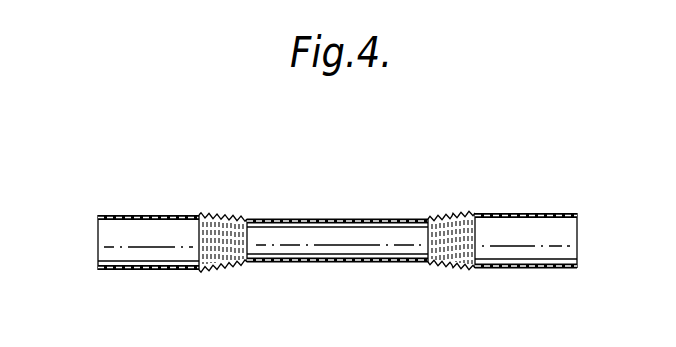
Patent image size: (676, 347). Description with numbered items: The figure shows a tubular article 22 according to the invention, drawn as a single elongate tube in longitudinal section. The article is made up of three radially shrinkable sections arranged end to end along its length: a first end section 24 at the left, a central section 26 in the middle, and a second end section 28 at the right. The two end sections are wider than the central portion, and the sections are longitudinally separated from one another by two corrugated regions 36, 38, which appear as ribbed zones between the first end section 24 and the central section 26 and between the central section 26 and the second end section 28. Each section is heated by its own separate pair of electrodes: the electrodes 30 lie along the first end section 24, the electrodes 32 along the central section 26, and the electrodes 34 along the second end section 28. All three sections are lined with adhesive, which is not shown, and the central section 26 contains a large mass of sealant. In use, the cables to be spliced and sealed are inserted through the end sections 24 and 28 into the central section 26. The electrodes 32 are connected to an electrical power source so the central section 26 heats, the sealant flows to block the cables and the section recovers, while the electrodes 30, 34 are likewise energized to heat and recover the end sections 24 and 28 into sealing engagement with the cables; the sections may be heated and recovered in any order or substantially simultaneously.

The tubular article 22 is at (459, 196).
The first end section 24 is at (138, 253).
The central section 26 is at (315, 250).
The second end section 28 is at (523, 252).
The electrodes on first end section 30 is at (147, 215).
The electrodes on central section 32 is at (310, 220).
The electrodes on second end section 34 is at (530, 218).
The first corrugated region 36 is at (229, 214).
The second corrugated region 38 is at (445, 217).